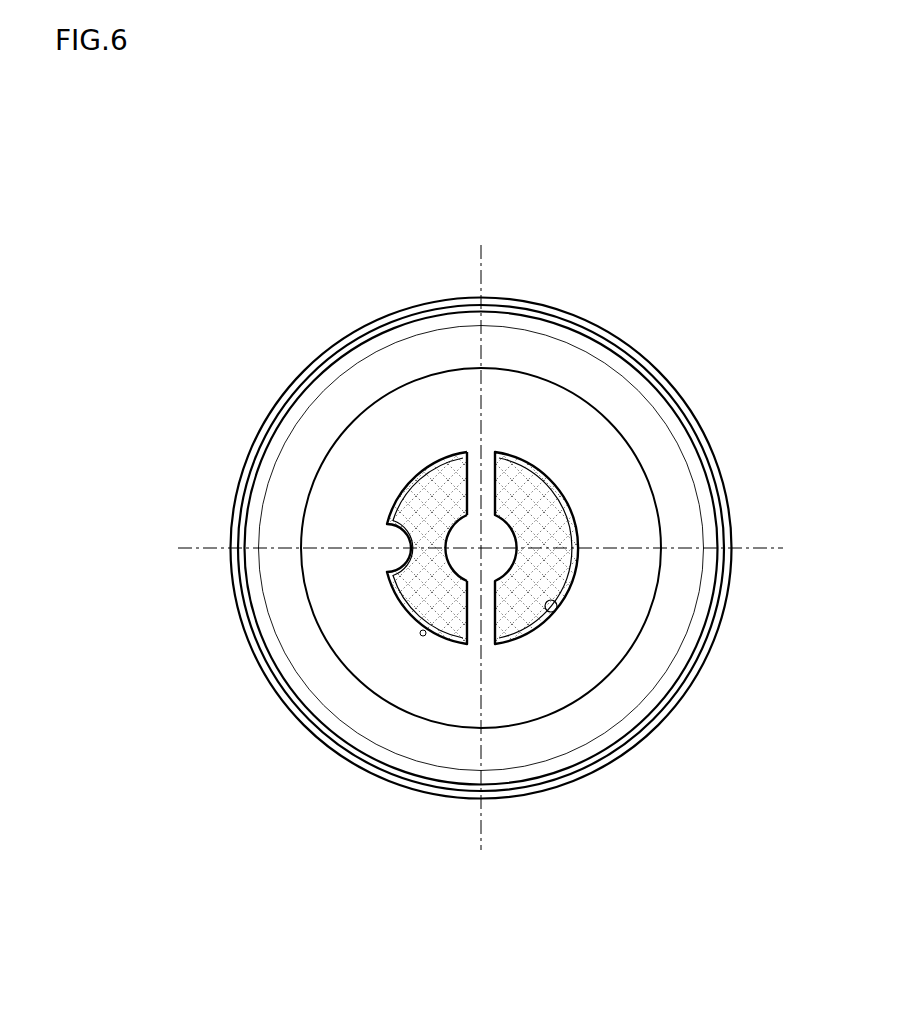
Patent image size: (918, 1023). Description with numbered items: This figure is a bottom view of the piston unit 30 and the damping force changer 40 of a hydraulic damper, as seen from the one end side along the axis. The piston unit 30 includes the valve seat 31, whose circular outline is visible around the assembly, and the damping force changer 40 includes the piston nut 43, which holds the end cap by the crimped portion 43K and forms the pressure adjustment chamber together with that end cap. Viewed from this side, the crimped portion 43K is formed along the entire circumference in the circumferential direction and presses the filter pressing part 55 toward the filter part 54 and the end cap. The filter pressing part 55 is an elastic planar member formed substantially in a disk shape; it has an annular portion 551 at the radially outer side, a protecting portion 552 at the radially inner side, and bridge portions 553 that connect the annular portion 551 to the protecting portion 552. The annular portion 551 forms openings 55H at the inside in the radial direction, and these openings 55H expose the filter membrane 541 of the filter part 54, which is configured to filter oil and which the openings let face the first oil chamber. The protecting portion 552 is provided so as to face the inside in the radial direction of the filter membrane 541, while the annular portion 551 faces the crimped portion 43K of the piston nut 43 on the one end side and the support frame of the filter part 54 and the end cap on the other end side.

The piston unit 30 is at (265, 685).
The valve seat 31 is at (235, 600).
The damping force changer 40 is at (600, 332).
The piston nut 43 is at (695, 448).
The crimped portion 43K is at (625, 417).
The filter part 54 is at (423, 636).
The filter membrane 541 is at (420, 580).
The filter pressing part 55 is at (403, 425).
The annular portion 551 is at (618, 598).
The protecting portion 552 is at (463, 538).
The bridge portion 553 is at (472, 483).
The opening 55H is at (556, 612).